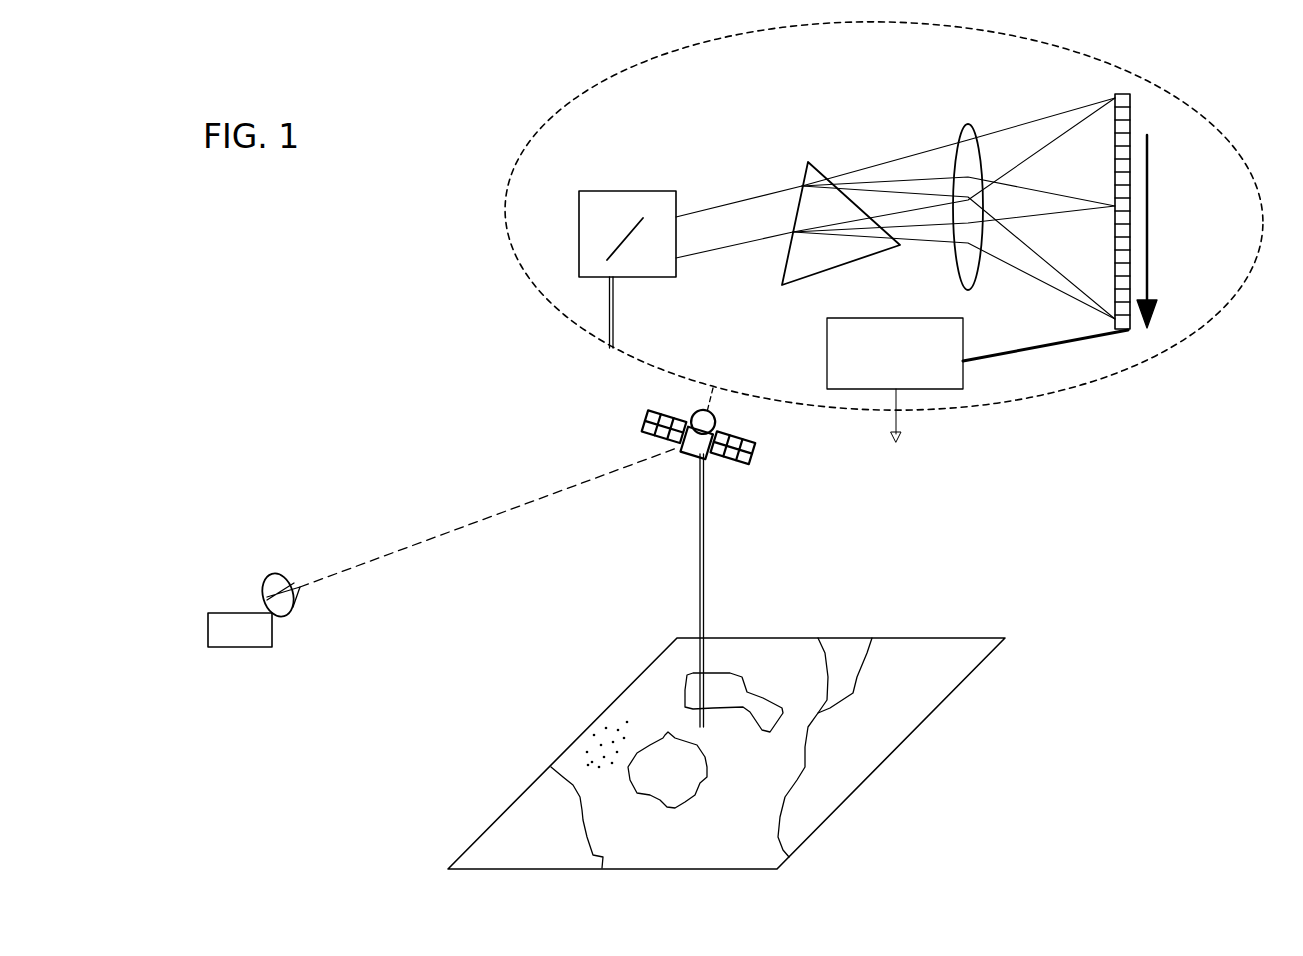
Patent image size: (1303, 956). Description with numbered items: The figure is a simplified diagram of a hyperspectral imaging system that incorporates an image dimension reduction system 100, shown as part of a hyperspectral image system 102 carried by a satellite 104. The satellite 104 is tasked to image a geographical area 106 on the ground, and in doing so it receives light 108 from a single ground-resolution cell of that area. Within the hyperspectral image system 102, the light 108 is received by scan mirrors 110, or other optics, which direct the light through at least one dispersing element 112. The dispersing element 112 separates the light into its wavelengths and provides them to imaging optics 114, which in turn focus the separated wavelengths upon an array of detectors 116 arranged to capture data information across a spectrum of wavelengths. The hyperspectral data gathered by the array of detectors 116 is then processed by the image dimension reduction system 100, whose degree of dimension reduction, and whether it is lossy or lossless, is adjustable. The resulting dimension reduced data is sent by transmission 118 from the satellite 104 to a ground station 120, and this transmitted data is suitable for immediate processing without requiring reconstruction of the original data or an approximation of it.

The image dimension reduction system 100 is at (955, 390).
The hyperspectral image system 102 is at (1118, 376).
The satellite 104 is at (750, 453).
The geographical area 106 is at (567, 752).
The light 108 is at (611, 293).
The scan mirrors 110 is at (641, 190).
The dispersing element 112 is at (806, 165).
The imaging optics 114 is at (968, 126).
The array of detectors 116 is at (1117, 94).
The transmission 118 is at (467, 527).
The ground station 120 is at (228, 613).